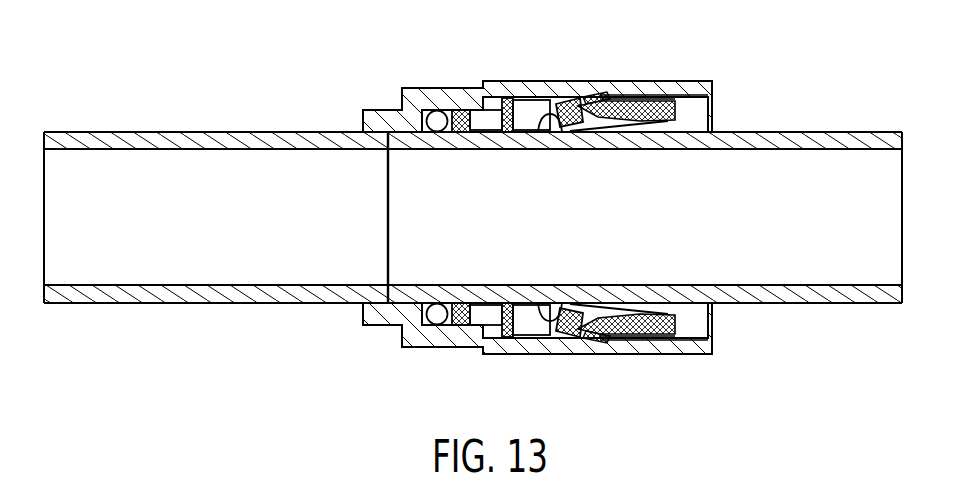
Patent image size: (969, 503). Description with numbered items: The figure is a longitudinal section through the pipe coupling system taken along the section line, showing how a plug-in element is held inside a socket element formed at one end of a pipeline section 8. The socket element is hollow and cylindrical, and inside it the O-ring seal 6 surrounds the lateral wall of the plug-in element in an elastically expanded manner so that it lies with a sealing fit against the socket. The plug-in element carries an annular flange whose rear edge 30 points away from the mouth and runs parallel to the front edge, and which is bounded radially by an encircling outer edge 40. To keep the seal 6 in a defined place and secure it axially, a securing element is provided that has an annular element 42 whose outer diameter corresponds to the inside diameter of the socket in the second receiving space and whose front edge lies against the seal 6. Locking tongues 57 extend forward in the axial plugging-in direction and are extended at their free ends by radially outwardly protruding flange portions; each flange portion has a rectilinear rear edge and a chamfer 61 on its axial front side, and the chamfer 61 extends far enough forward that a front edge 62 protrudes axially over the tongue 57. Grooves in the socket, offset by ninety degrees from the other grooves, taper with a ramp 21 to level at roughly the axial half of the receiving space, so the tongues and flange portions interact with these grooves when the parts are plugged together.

The pipeline section 8 is at (167, 132).
The O-ring seal 6 is at (437, 118).
The annular element 42 is at (458, 112).
The chamfer 61 is at (570, 103).
The ramp 21 is at (582, 94).
The locking tongue 57 is at (615, 110).
The encircling outer edge 40 is at (550, 118).
The rear edge 30 is at (553, 122).
The front edge 62 is at (567, 124).